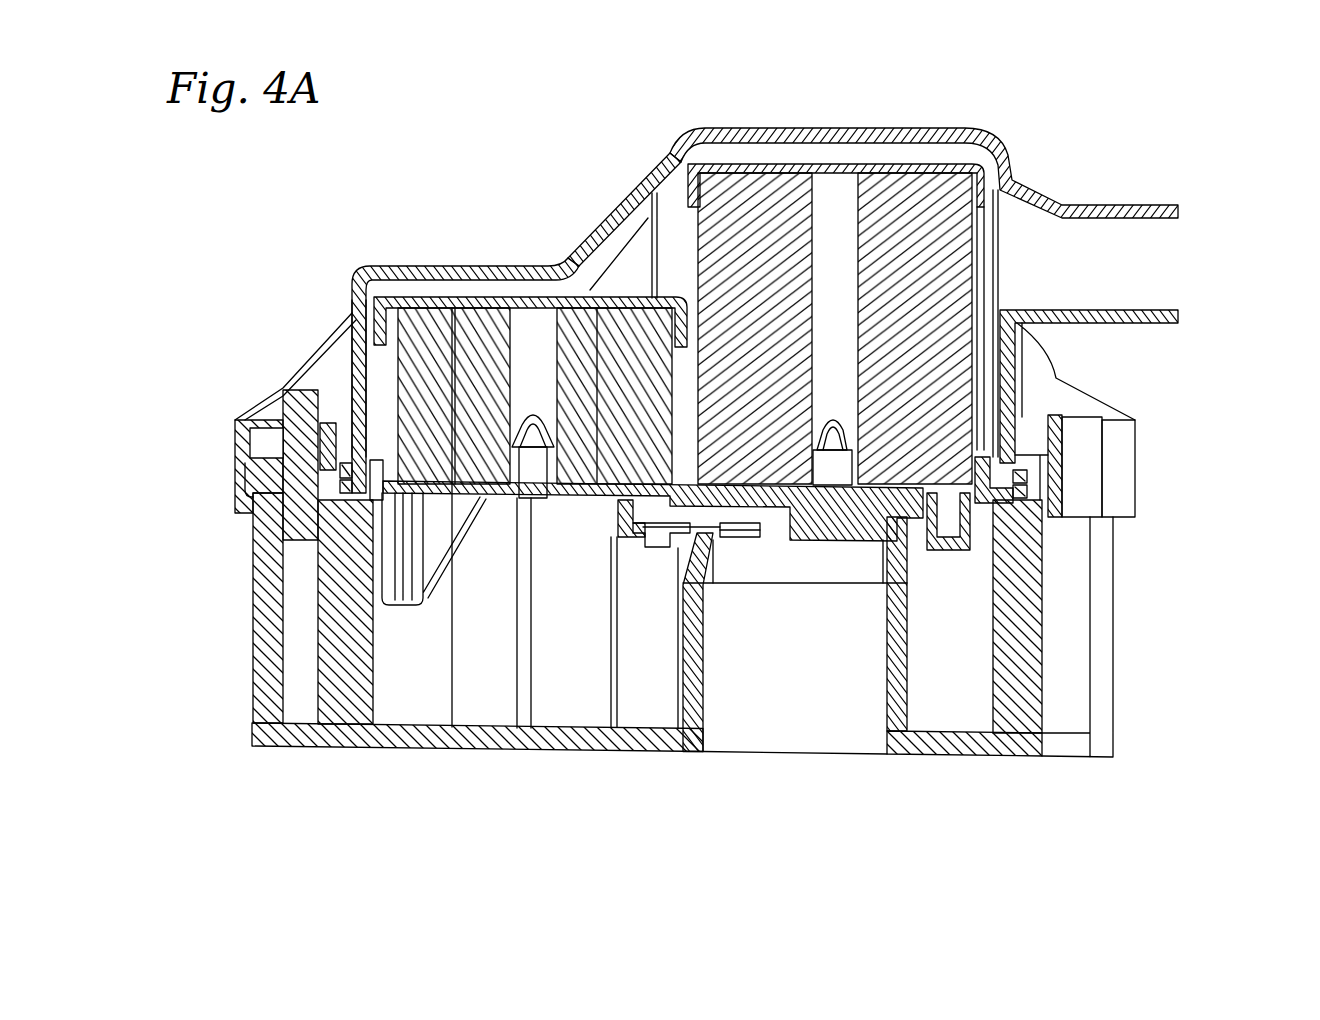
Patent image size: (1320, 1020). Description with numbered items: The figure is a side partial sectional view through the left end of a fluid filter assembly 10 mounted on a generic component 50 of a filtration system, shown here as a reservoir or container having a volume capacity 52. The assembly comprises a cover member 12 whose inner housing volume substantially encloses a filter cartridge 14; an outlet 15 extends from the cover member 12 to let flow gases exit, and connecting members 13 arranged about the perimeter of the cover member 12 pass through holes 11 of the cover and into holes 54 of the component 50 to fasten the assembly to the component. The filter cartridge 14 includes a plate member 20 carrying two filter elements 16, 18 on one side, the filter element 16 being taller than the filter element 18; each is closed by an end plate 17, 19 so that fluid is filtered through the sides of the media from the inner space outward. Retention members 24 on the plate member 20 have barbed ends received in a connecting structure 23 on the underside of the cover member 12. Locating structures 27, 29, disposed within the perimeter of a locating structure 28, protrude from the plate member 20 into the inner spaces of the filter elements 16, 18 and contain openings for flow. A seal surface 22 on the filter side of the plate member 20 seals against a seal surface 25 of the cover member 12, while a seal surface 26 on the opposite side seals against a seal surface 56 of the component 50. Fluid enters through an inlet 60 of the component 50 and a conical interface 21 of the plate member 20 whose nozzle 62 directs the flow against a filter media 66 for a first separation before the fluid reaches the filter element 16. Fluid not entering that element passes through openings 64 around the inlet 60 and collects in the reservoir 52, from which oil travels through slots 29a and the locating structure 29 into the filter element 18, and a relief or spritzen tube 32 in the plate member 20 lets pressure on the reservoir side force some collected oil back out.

The fluid filter assembly 10 is at (1163, 385).
The through holes 11 is at (287, 440).
The cover member 12 is at (480, 267).
The connecting members 13 is at (287, 392).
The filter cartridge 14 is at (967, 540).
The outlet 15 is at (1112, 205).
The filter element 16 is at (905, 185).
The end plate 17 is at (668, 217).
The filter element 18 is at (450, 320).
The end plate 19 is at (384, 450).
The plate member 20 is at (1017, 470).
The interface 21 is at (945, 530).
The seal surface 22 is at (343, 430).
The connecting structure 23 is at (667, 215).
The retention members 24 is at (605, 262).
The seal surface 25 is at (1048, 440).
The seal surface 26 is at (1013, 490).
The locating structure 27 is at (836, 415).
The locating structure 28 is at (348, 318).
The locating structure 29 is at (536, 410).
The slots 29a is at (520, 505).
The relief or spritzen tube 32 is at (380, 560).
The component 50 is at (1113, 657).
The volume capacity 52 is at (968, 660).
The holes 54 is at (288, 640).
The seal surface 56 is at (317, 475).
The inlet 60 is at (745, 740).
The nozzle 62 is at (740, 537).
The openings 64 is at (652, 545).
The filter media 66 is at (800, 542).